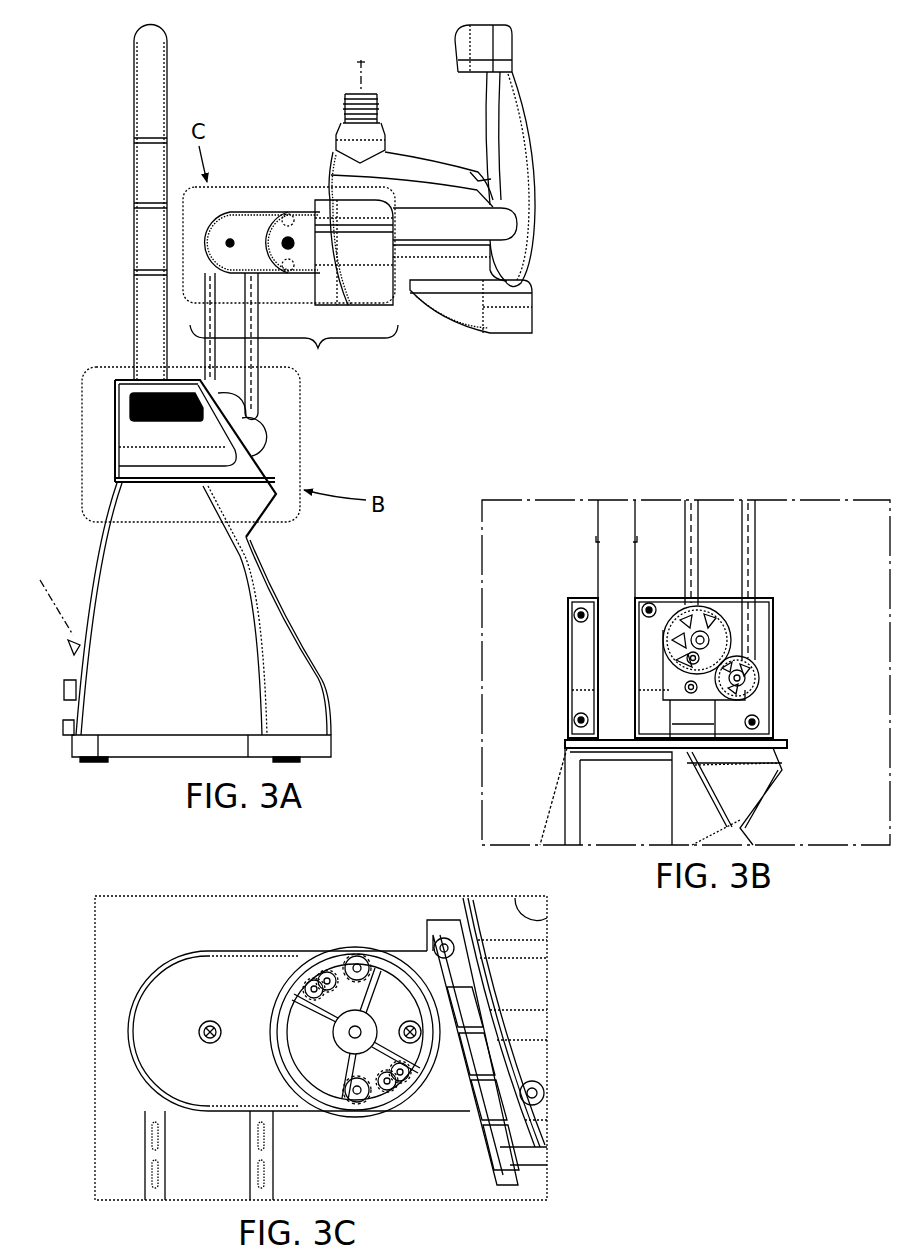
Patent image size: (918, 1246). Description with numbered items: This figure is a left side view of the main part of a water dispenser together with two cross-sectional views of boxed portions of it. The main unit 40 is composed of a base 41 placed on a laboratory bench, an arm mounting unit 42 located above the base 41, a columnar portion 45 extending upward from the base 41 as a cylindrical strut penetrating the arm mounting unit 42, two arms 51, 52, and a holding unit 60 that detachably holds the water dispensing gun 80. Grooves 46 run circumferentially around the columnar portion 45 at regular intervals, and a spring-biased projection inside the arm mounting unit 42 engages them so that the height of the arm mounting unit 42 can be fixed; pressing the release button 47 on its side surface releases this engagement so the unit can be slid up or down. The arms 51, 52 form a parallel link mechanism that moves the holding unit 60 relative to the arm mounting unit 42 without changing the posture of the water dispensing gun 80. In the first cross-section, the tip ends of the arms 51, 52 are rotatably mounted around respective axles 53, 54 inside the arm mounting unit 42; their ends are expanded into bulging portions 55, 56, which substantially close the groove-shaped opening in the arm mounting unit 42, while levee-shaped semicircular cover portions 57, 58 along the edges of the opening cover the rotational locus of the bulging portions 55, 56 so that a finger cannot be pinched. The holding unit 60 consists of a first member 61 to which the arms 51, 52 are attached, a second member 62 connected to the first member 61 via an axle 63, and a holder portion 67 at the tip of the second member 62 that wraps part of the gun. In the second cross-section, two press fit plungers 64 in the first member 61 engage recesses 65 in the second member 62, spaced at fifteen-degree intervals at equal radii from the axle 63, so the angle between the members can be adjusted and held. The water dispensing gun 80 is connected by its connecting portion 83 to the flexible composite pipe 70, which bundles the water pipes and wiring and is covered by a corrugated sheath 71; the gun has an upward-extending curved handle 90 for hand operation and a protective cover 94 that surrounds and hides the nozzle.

In FIG. 3A, the main unit 40 is at (263, 60).
In FIG. 3A, the base 41 is at (118, 550).
In FIG. 3B, the base 41 is at (550, 810).
In FIG. 3A, the arm mounting unit 42 is at (130, 440).
In FIG. 3B, the arm mounting unit 42 is at (580, 615).
In FIG. 3A, the columnar portion 45 is at (140, 88).
In FIG. 3B, the columnar portion 45 is at (608, 520).
In FIG. 3A, the grooves 46 is at (138, 142).
In FIG. 3B, the grooves 46 is at (603, 547).
In FIG. 3A, the release button 47 is at (132, 405).
In FIG. 3A, the arm 51 is at (259, 404).
In FIG. 3B, the arm 51 is at (757, 530).
In FIG. 3C, the arm 51 is at (256, 1172).
In FIG. 3A, the arm 52 is at (204, 286).
In FIG. 3B, the arm 52 is at (690, 510).
In FIG. 3C, the arm 52 is at (145, 1160).
In FIG. 3B, the axle 53 is at (742, 682).
In FIG. 3B, the axle 54 is at (705, 640).
In FIG. 3B, the bulging portion 55 is at (752, 664).
In FIG. 3B, the bulging portion 56 is at (682, 603).
In FIG. 3A, the cover portion 57 is at (262, 440).
In FIG. 3B, the cover portion 57 is at (762, 677).
In FIG. 3B, the cover portion 58 is at (712, 622).
In FIG. 3A, the holding unit 60 is at (294, 358).
In FIG. 3A, the first member 61 is at (231, 230).
In FIG. 3C, the first member 61 is at (175, 975).
In FIG. 3A, the second member 62 is at (300, 222).
In FIG. 3C, the second member 62 is at (400, 952).
In FIG. 3A, the axle 63 is at (292, 247).
In FIG. 3C, the axle 63 is at (352, 1037).
In FIG. 3A, the press fit plunger 64 is at (283, 214).
In FIG. 3C, the press fit plunger 64 is at (356, 958).
In FIG. 3C, the recesses 65 is at (340, 965).
In FIG. 3A, the holder portion 67 is at (327, 210).
In FIG. 3C, the holder portion 67 is at (495, 1168).
In FIG. 3A, the composite pipe 70 is at (364, 63).
In FIG. 3A, the sheath or cover 71 is at (378, 104).
In FIG. 3A, the water dispensing gun 80 is at (553, 92).
In FIG. 3A, the connecting portion 83 is at (378, 140).
In FIG. 3A, the handle 90 is at (520, 168).
In FIG. 3A, the protective cover 94 is at (520, 322).